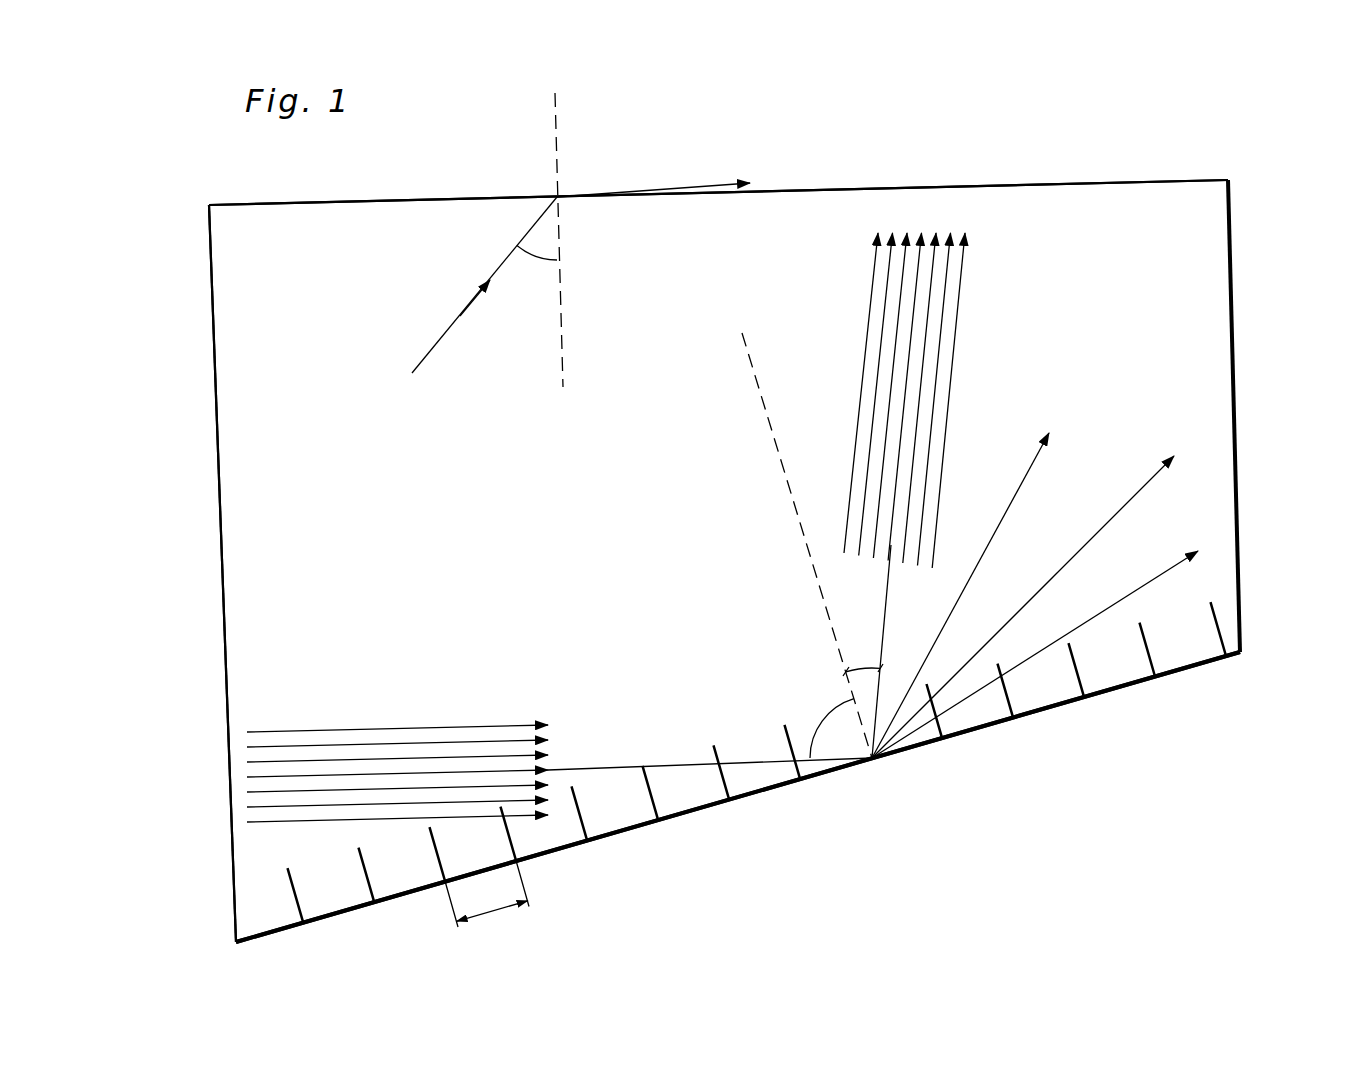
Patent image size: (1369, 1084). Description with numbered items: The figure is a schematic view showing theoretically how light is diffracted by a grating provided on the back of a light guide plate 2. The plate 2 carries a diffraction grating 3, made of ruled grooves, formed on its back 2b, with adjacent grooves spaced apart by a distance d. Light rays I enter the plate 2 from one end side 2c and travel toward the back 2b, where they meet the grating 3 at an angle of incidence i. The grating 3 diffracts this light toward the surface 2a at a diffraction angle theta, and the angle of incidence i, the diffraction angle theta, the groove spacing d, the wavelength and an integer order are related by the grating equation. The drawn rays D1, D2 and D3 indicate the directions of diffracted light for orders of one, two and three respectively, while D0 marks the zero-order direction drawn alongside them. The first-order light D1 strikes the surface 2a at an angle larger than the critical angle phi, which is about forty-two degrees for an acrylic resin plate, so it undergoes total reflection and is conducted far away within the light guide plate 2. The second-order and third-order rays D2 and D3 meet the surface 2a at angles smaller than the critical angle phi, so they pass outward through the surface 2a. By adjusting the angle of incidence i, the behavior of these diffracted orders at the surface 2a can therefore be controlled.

The light guide plate 2 is at (1252, 304).
The surface 2a is at (1123, 178).
The back 2b is at (1185, 665).
The end side 2c is at (212, 400).
The diffraction grating 3 is at (517, 847).
The distance d is at (487, 894).
The light rays I is at (247, 778).
The angle of incidence i is at (807, 545).
The diffraction angle theta is at (867, 651).
The critical angle phi is at (581, 240).
The zeroth-order diffracted light D0 is at (1125, 596).
The first-order diffracted light D1 is at (1120, 512).
The second-order diffracted light D2 is at (1030, 470).
The third-order diffracted light D3 is at (922, 240).